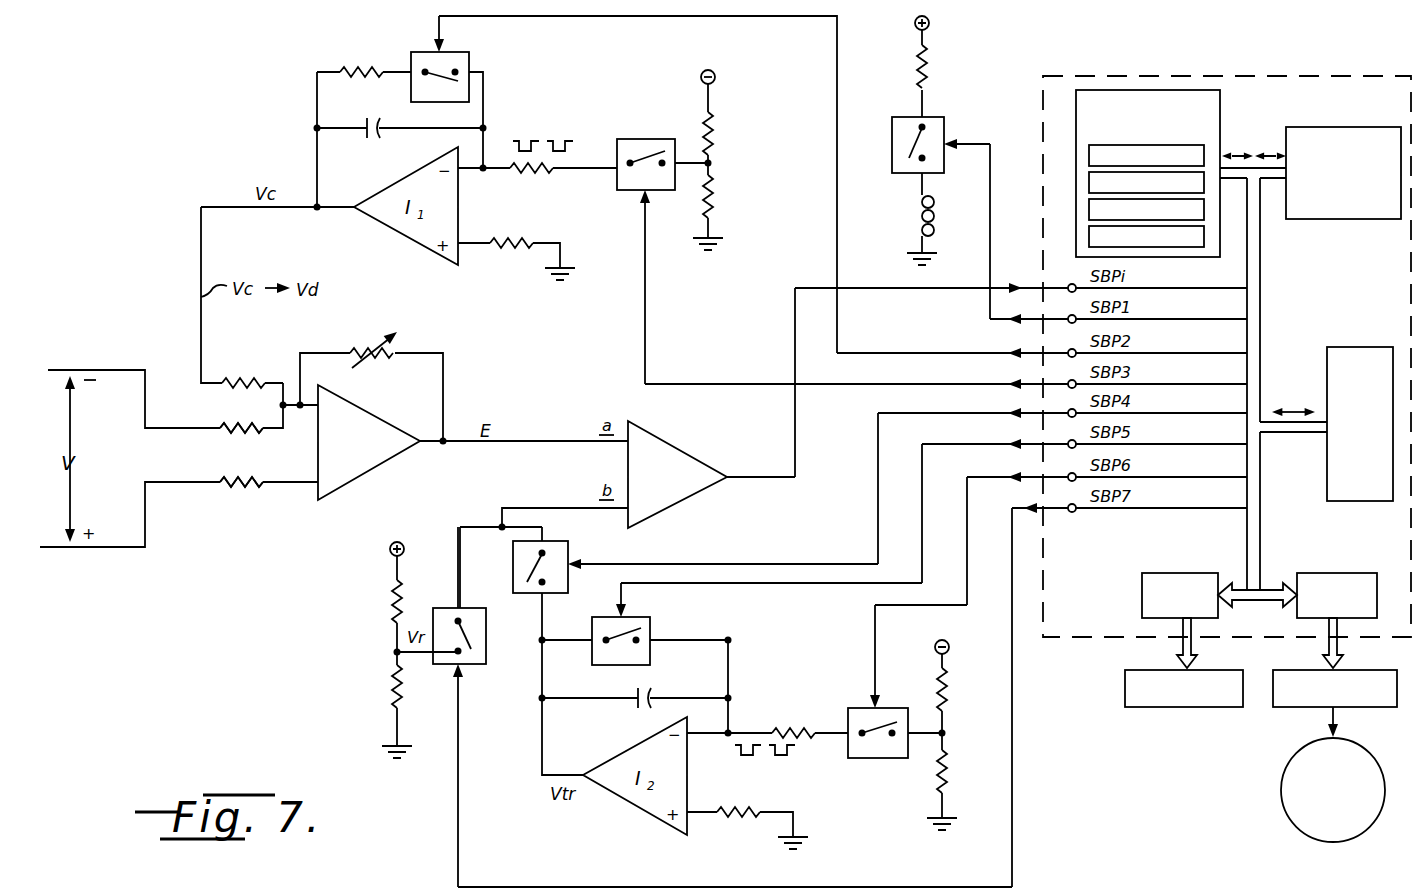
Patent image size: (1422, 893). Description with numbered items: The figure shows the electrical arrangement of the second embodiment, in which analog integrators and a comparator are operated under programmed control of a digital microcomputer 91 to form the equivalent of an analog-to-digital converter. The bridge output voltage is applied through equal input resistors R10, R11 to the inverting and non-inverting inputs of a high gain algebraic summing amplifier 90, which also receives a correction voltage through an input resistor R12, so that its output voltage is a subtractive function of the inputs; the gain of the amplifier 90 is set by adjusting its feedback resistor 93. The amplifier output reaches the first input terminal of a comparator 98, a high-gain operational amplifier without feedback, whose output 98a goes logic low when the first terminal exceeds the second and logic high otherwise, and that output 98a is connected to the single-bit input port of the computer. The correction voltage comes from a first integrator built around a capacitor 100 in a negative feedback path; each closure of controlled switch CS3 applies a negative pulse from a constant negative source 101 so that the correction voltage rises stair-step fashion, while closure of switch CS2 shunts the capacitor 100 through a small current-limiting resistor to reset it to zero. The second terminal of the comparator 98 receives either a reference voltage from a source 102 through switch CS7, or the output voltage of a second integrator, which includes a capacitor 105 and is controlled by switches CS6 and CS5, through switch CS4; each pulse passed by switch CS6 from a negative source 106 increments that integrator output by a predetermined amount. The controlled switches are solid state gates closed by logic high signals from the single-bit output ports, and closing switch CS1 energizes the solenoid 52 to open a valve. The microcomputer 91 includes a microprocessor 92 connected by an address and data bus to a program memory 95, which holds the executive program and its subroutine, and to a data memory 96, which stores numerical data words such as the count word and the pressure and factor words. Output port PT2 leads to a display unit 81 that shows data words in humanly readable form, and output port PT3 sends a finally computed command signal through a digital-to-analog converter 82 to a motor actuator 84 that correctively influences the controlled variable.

The capacitor 100 is at (353, 140).
The constant negative source 101 is at (716, 163).
The solenoid 52 is at (914, 208).
The digital microcomputer 91 is at (1273, 66).
The data memory 96 is at (1213, 110).
The program memory 95 is at (1340, 220).
The microprocessor 92 is at (1345, 347).
The feedback resistor 93 is at (373, 345).
The algebraic summing amplifier 90 is at (385, 462).
The comparator 98 is at (680, 455).
The comparator output 98a is at (742, 479).
The display unit 81 is at (1165, 708).
The digital-to-analog converter 82 is at (1293, 708).
The motor actuator 84 is at (1302, 826).
The reference voltage source 102 is at (390, 650).
The capacitor 105 is at (636, 703).
The negative source 106 is at (952, 731).
The controlled switch CS1 is at (943, 129).
The controlled switch CS2 is at (470, 60).
The controlled switch CS3 is at (652, 139).
The controlled switch CS4 is at (569, 546).
The controlled switch CS5 is at (652, 621).
The controlled switch CS6 is at (855, 705).
The controlled switch CS7 is at (478, 668).
The input resistor R10 is at (241, 435).
The input resistor R11 is at (241, 488).
The input resistor R12 is at (260, 378).
The output port PT2 is at (1190, 573).
The output port PT3 is at (1360, 571).